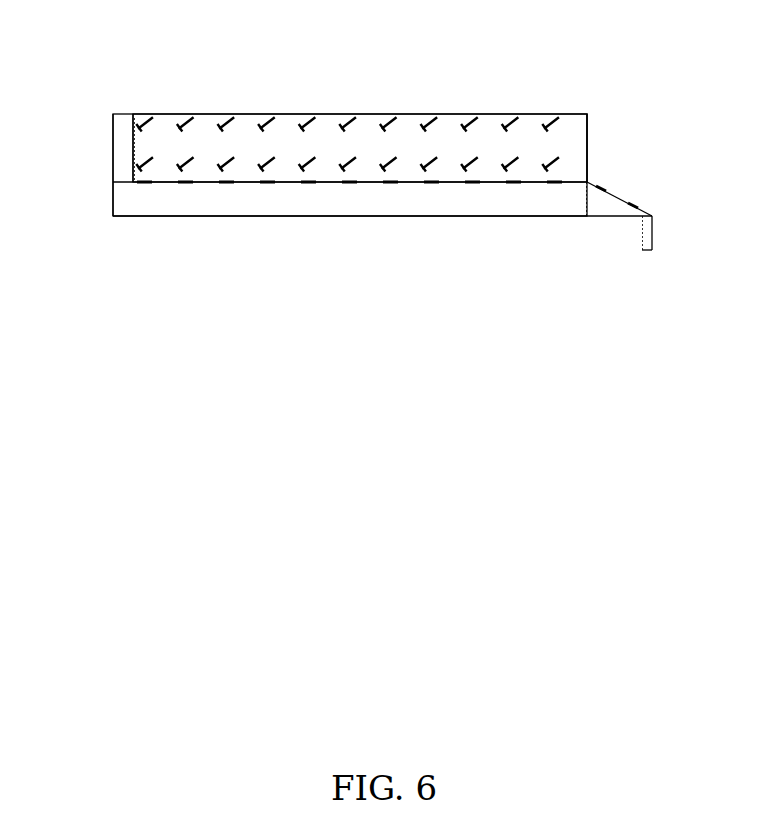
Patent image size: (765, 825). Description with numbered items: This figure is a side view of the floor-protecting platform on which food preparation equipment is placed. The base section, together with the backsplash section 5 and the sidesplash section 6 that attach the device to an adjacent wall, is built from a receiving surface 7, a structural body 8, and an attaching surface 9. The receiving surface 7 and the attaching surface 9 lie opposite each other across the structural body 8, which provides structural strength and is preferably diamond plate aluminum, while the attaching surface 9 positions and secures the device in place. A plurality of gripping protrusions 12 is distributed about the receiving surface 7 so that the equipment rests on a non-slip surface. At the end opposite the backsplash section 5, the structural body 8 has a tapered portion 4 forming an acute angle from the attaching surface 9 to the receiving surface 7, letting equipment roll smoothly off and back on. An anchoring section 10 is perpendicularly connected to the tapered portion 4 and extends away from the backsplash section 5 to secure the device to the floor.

The tapered portion 4 is at (596, 205).
The backsplash section 5 is at (94, 128).
The sidesplash section 6 is at (594, 128).
The receiving surface 7 is at (134, 152).
The structural body 8 is at (350, 197).
The attaching surface 9 is at (113, 150).
The anchoring section 10 is at (647, 246).
The gripping protrusions 12 is at (228, 121).